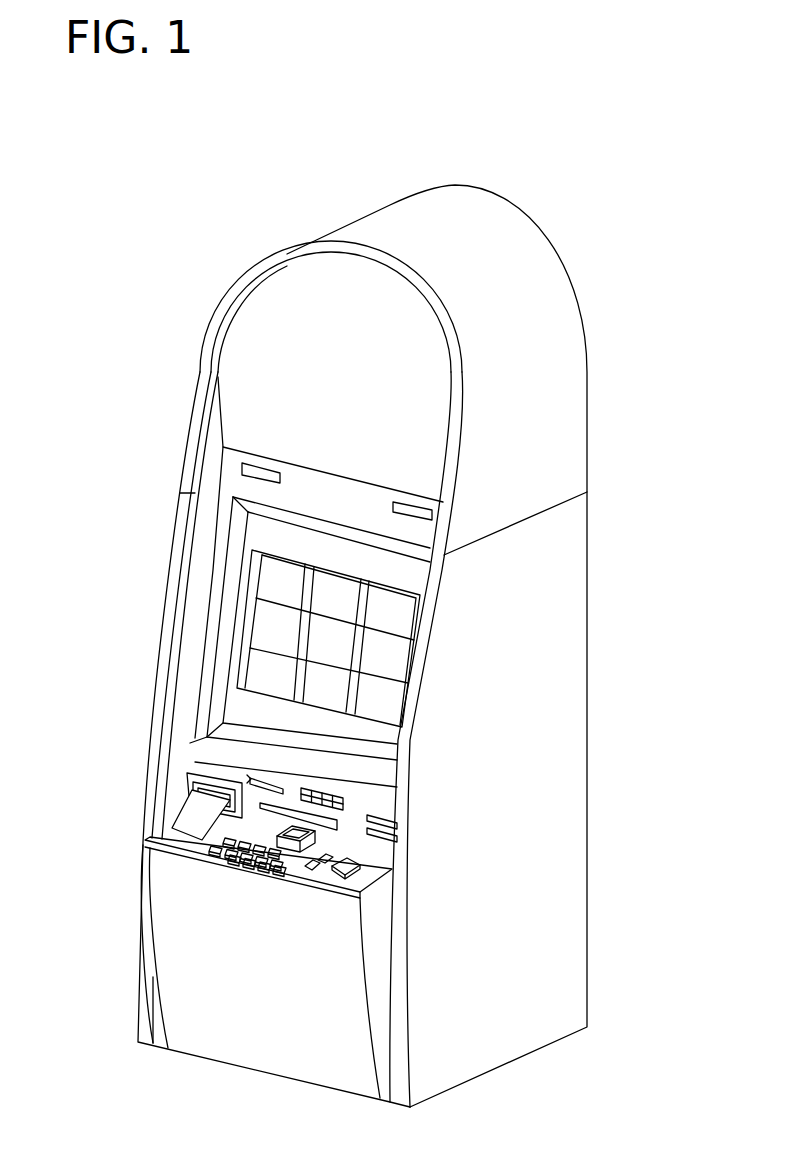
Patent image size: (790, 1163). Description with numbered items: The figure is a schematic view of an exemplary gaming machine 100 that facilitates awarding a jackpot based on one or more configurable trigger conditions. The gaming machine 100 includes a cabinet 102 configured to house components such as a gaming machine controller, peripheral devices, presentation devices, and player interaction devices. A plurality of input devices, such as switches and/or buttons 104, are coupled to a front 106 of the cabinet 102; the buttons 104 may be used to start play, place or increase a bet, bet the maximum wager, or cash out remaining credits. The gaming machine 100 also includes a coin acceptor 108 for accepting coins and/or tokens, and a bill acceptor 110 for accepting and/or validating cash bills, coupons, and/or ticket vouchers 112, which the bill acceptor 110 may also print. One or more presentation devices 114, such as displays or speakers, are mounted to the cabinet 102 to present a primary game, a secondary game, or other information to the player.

The gaming machine 100 is at (576, 145).
The cabinet 102 is at (545, 278).
The buttons 104 is at (243, 858).
The front 106 is at (230, 463).
The coin acceptor 108 is at (293, 843).
The bill acceptor 110 is at (187, 778).
The ticket vouchers 112 is at (183, 822).
The presentation devices 114 is at (387, 700).